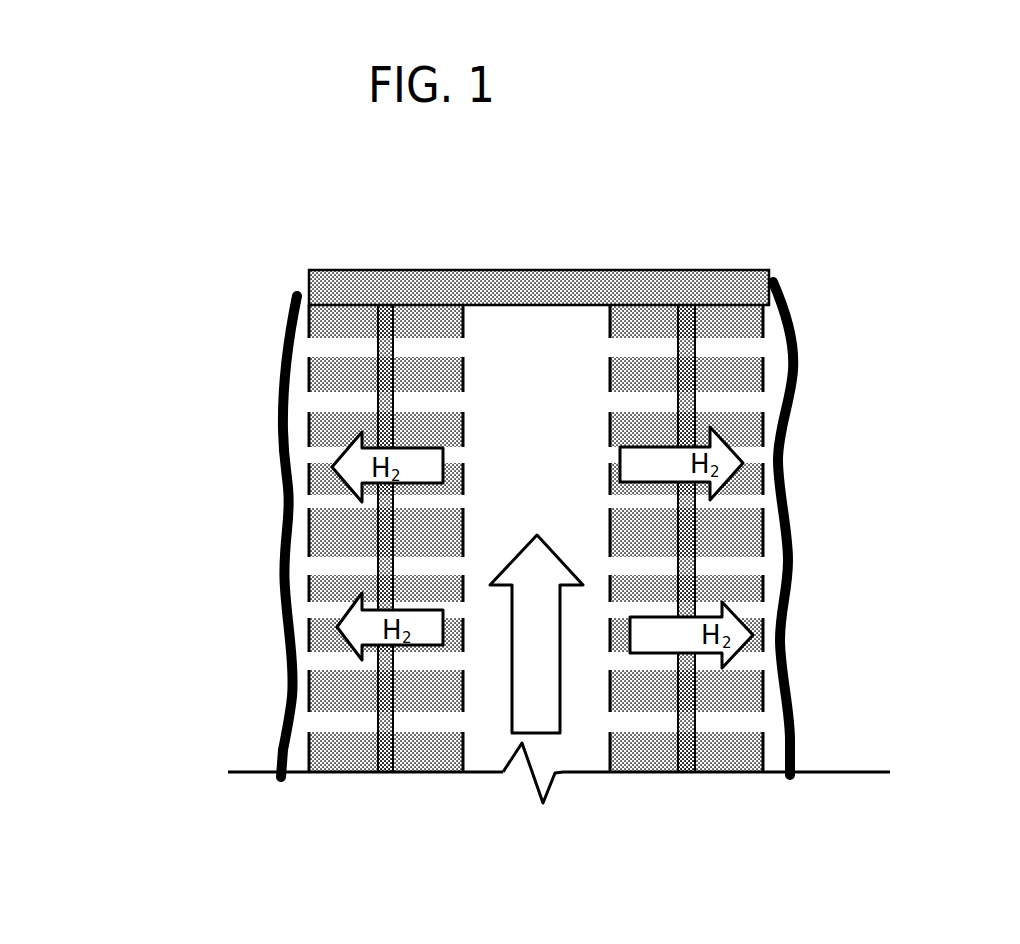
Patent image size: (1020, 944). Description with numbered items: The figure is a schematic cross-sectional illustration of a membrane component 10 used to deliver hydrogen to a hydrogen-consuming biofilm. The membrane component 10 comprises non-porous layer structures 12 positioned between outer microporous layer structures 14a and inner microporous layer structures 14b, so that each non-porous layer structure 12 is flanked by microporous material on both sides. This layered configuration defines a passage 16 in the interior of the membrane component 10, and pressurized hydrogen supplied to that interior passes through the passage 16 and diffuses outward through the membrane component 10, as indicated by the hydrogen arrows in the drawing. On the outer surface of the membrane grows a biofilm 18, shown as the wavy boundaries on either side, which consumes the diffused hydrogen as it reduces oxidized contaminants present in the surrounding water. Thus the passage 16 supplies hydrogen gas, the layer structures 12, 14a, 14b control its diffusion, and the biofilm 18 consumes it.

The membrane component 10 is at (808, 256).
The non-porous layer structures 12 is at (385, 698).
The outer microporous layer structures 14a is at (353, 535).
The inner microporous layer structures 14b is at (423, 757).
The passage 16 is at (558, 750).
The biofilm 18 is at (275, 379).